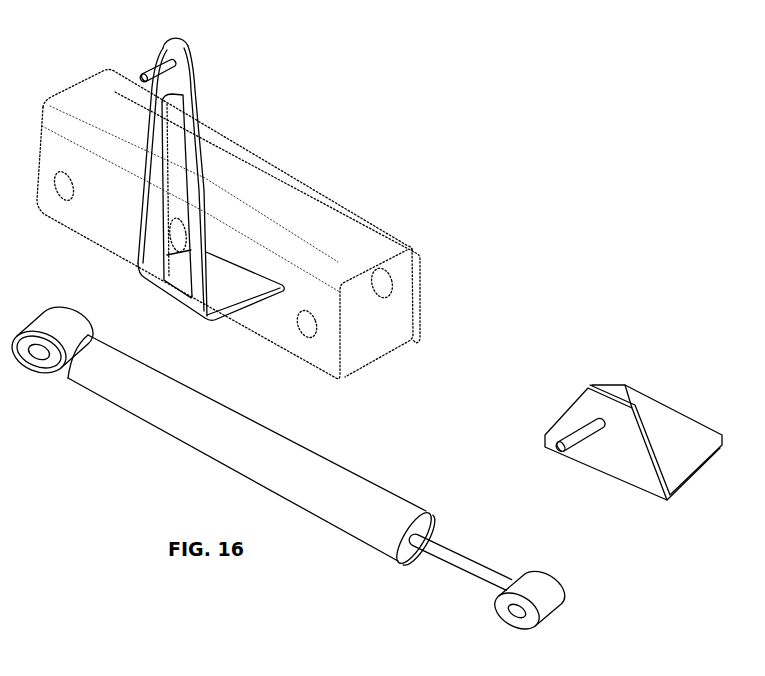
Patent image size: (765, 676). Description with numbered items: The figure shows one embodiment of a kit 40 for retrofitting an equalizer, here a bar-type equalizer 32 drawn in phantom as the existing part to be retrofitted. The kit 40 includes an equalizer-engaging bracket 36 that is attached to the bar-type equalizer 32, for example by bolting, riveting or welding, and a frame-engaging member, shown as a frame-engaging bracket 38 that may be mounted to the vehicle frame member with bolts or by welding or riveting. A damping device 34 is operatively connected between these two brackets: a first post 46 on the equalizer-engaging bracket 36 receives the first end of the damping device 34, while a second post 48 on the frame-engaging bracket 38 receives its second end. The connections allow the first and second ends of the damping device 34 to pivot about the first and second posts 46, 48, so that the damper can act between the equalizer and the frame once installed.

The bar-type equalizer 32 is at (298, 196).
The damping device 34 is at (202, 437).
The equalizer-engaging bracket 36 is at (142, 265).
The frame-engaging bracket 38 is at (668, 417).
The kit 40 is at (493, 127).
The first post 46 is at (138, 75).
The second post 48 is at (570, 448).